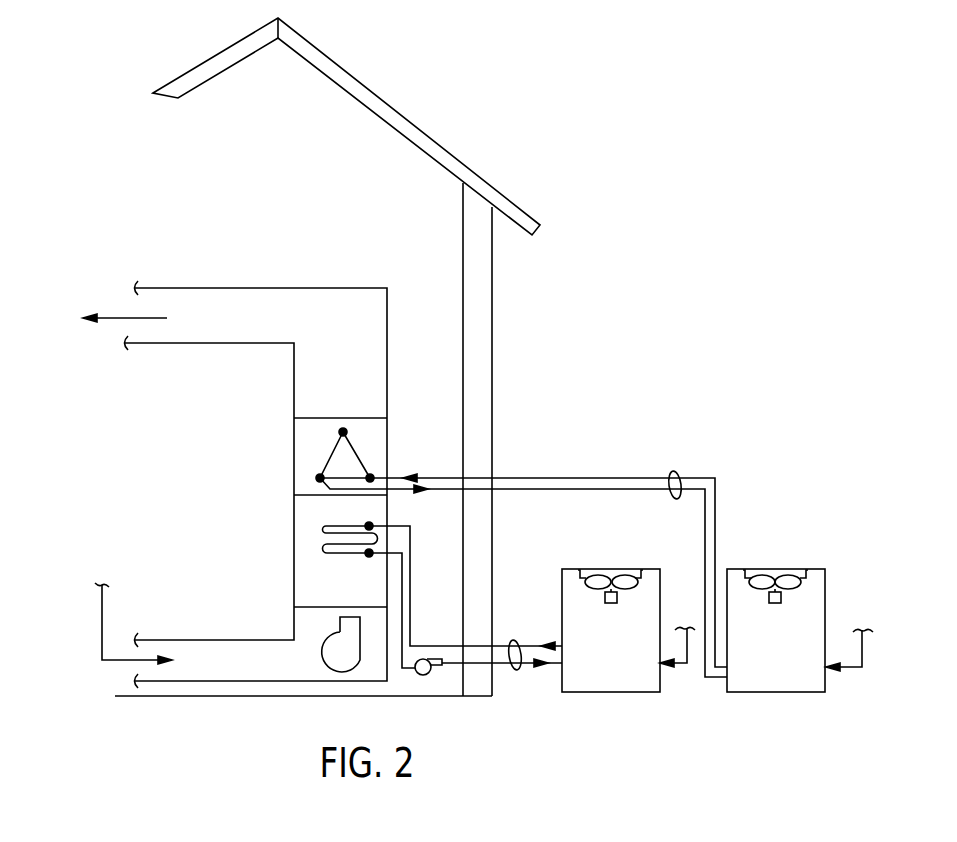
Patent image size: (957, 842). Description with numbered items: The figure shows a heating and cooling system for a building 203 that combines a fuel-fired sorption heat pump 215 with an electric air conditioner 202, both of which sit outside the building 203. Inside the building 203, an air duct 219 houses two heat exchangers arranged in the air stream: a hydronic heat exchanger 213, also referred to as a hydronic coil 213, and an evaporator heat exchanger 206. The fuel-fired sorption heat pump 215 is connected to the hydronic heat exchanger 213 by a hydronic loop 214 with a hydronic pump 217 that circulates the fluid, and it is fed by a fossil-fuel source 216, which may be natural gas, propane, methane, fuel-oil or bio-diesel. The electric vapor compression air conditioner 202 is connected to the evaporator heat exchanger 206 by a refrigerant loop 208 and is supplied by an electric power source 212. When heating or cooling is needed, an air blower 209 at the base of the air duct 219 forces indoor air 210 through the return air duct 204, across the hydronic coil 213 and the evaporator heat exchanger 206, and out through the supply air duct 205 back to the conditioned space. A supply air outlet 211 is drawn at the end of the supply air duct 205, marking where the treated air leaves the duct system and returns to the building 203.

The electric air conditioner 202 is at (762, 641).
The building 203 is at (485, 325).
The return air duct 204 is at (230, 666).
The supply air duct 205 is at (265, 316).
The evaporator heat exchanger 206 is at (377, 447).
The refrigerant loop 208 is at (678, 471).
The air blower 209 is at (352, 667).
The indoor air 210 is at (102, 635).
The supply air outlet 211 is at (113, 316).
The electric power source 212 is at (863, 657).
The hydronic heat exchanger 213 is at (303, 578).
The hydronic loop 214 is at (518, 640).
The fuel-fired sorption heat pump 215 is at (597, 641).
The fossil-fuel source 216 is at (689, 665).
The hydronic pump 217 is at (425, 658).
The air duct 219 is at (293, 510).